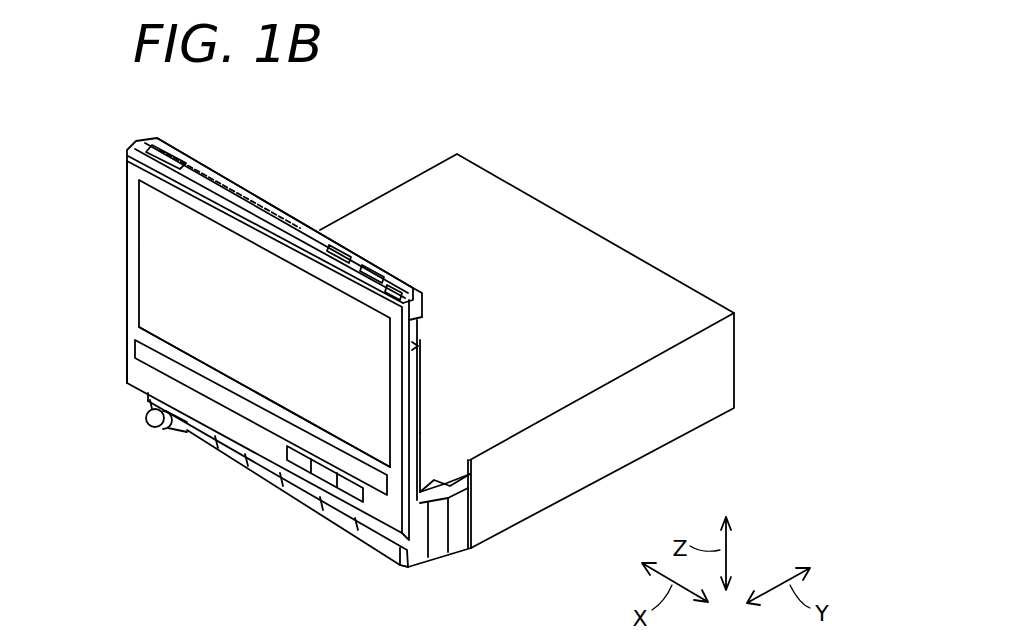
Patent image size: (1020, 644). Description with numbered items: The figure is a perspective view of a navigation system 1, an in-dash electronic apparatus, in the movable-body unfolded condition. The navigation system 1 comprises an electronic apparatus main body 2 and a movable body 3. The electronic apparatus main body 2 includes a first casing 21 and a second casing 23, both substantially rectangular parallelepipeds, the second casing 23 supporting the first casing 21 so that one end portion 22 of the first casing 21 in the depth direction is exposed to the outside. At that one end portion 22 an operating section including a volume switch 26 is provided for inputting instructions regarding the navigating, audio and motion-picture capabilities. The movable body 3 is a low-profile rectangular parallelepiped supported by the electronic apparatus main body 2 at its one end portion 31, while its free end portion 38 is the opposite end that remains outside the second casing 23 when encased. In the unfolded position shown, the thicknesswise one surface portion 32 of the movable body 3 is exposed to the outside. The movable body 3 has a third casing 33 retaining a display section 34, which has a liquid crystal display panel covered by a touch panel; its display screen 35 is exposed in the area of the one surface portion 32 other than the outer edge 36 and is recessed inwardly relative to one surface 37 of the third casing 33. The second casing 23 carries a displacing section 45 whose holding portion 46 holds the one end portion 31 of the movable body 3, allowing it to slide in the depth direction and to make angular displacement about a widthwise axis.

The navigation system 1 is at (367, 131).
The electronic apparatus main body 2 is at (432, 546).
The movable body 3 is at (138, 204).
The first casing 21 is at (457, 540).
The one end portion 22 is at (422, 557).
The second casing 23 is at (593, 470).
The volume switch 26 is at (150, 423).
The one end portion of the movable body 31 is at (390, 520).
The thicknesswise one surface portion 32 is at (153, 285).
The third casing 33 is at (130, 317).
The display section 34 is at (150, 263).
The display screen 35 is at (233, 250).
The outer edge 36 is at (282, 242).
The one surface of the third casing 37 is at (176, 192).
The free end portion 38 is at (147, 146).
The displacing section 45 is at (438, 463).
The holding portion 46 is at (452, 460).